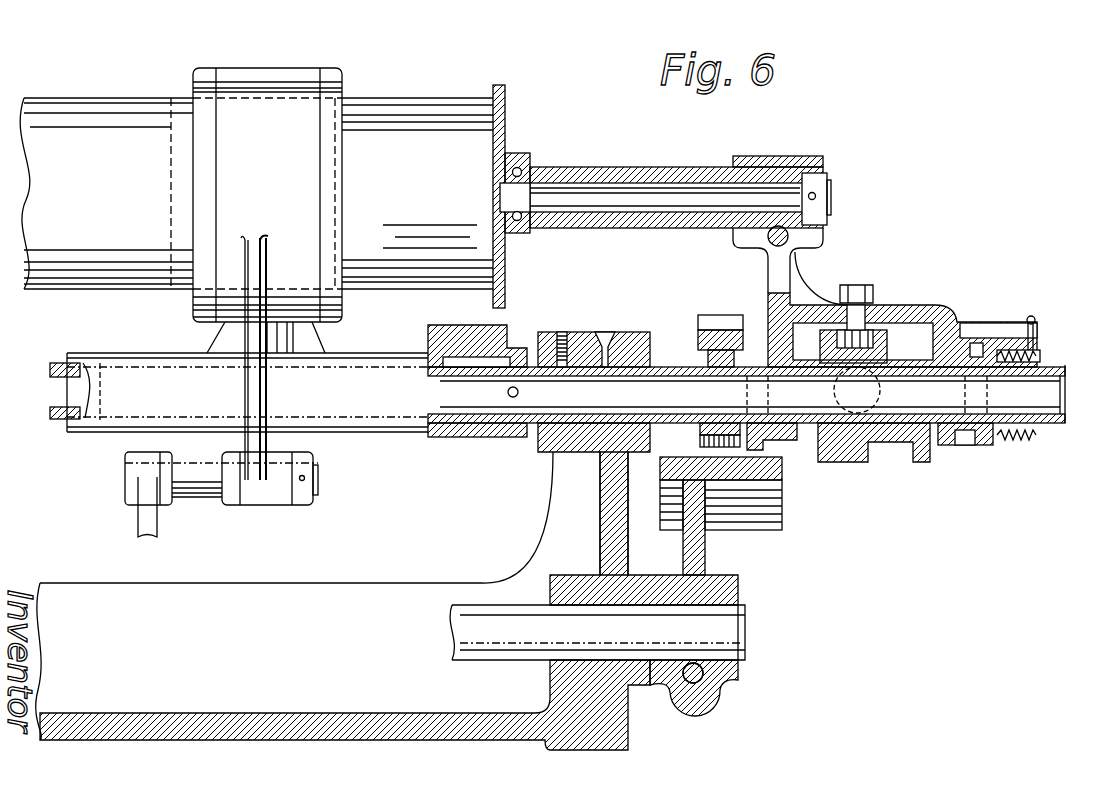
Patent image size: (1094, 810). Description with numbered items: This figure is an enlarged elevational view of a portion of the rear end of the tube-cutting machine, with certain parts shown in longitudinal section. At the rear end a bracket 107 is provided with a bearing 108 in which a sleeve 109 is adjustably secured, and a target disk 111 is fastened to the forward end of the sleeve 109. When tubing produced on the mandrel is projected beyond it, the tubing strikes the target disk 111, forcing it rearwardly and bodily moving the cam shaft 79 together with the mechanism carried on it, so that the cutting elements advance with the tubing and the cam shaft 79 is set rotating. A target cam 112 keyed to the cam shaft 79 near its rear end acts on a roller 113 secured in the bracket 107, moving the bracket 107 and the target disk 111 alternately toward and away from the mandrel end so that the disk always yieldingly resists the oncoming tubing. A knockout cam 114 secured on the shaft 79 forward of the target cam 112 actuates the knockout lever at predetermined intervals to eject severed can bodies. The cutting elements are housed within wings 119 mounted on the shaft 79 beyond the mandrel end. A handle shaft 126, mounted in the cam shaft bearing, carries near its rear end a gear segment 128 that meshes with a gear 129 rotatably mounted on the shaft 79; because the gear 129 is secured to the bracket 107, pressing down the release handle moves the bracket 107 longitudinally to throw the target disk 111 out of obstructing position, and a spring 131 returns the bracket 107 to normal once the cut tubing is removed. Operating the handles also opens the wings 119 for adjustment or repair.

The cam shaft 79 is at (1045, 372).
The bracket 107 is at (939, 314).
The bearing 108 is at (808, 157).
The sleeve 109 is at (642, 168).
The target disk 111 is at (504, 121).
The target cam 112 is at (885, 462).
The roller 113 is at (895, 308).
The knockout cam 114 is at (463, 431).
The wings 119 is at (302, 80).
The handle shaft 126 is at (718, 633).
The gear segment 128 is at (762, 528).
The gear 129 is at (716, 318).
The spring 131 is at (1018, 442).